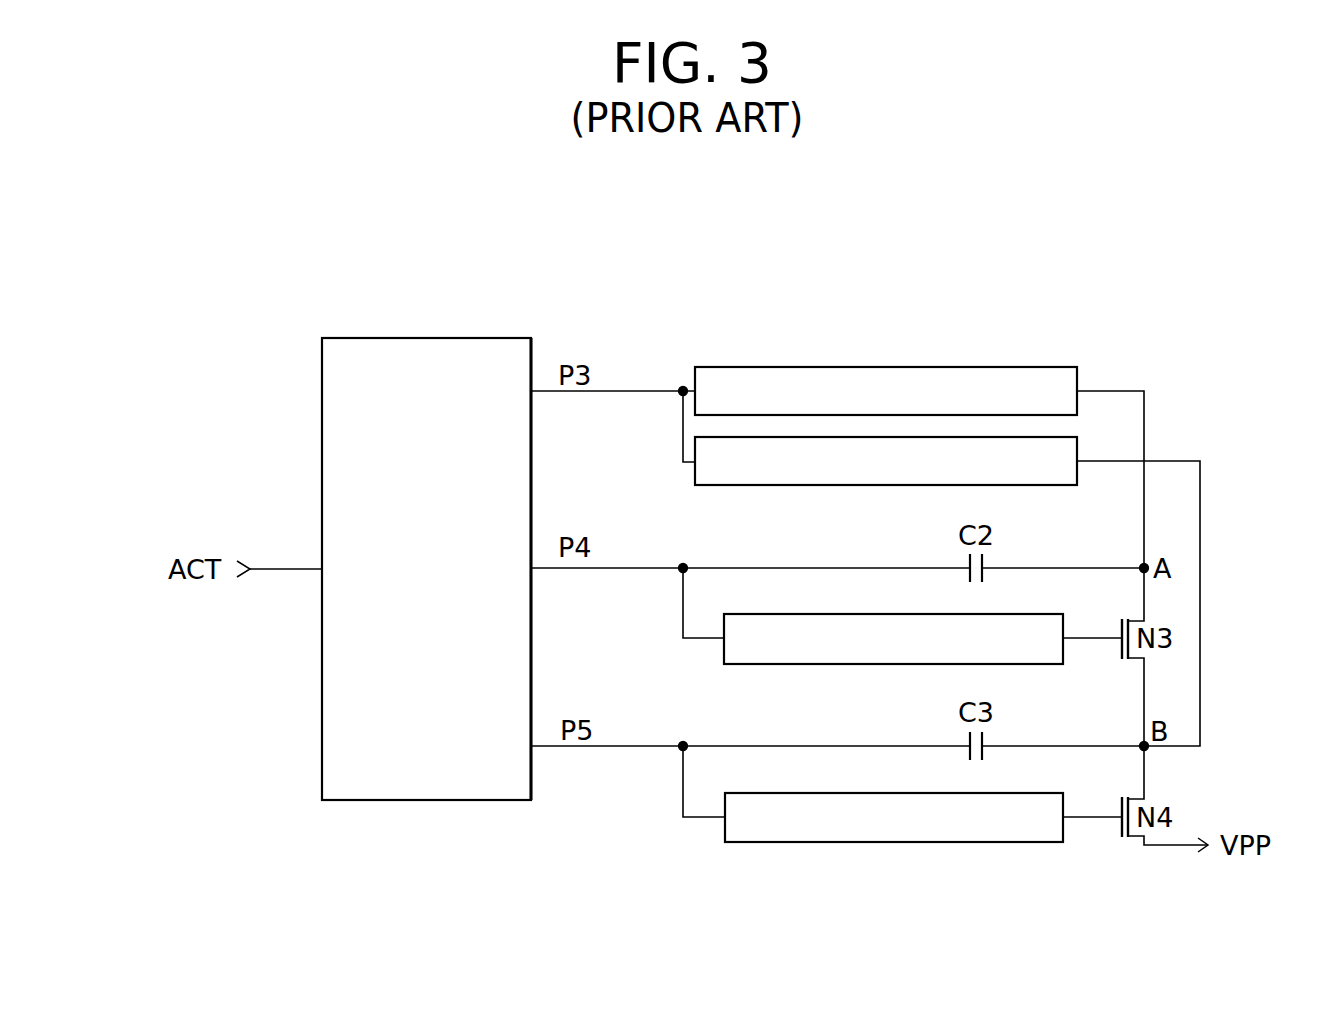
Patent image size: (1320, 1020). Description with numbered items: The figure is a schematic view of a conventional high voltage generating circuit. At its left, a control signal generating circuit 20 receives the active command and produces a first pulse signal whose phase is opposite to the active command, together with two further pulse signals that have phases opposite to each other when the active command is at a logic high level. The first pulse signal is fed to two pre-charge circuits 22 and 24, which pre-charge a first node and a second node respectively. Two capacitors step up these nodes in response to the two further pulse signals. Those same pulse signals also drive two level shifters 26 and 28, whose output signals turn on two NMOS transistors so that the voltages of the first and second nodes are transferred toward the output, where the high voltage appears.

The control signal generating circuit 20 is at (505, 802).
The pre-charge circuit 22 is at (1044, 366).
The pre-charge circuit 24 is at (1047, 486).
The level shifter 26 is at (1040, 665).
The level shifter 28 is at (1042, 843).